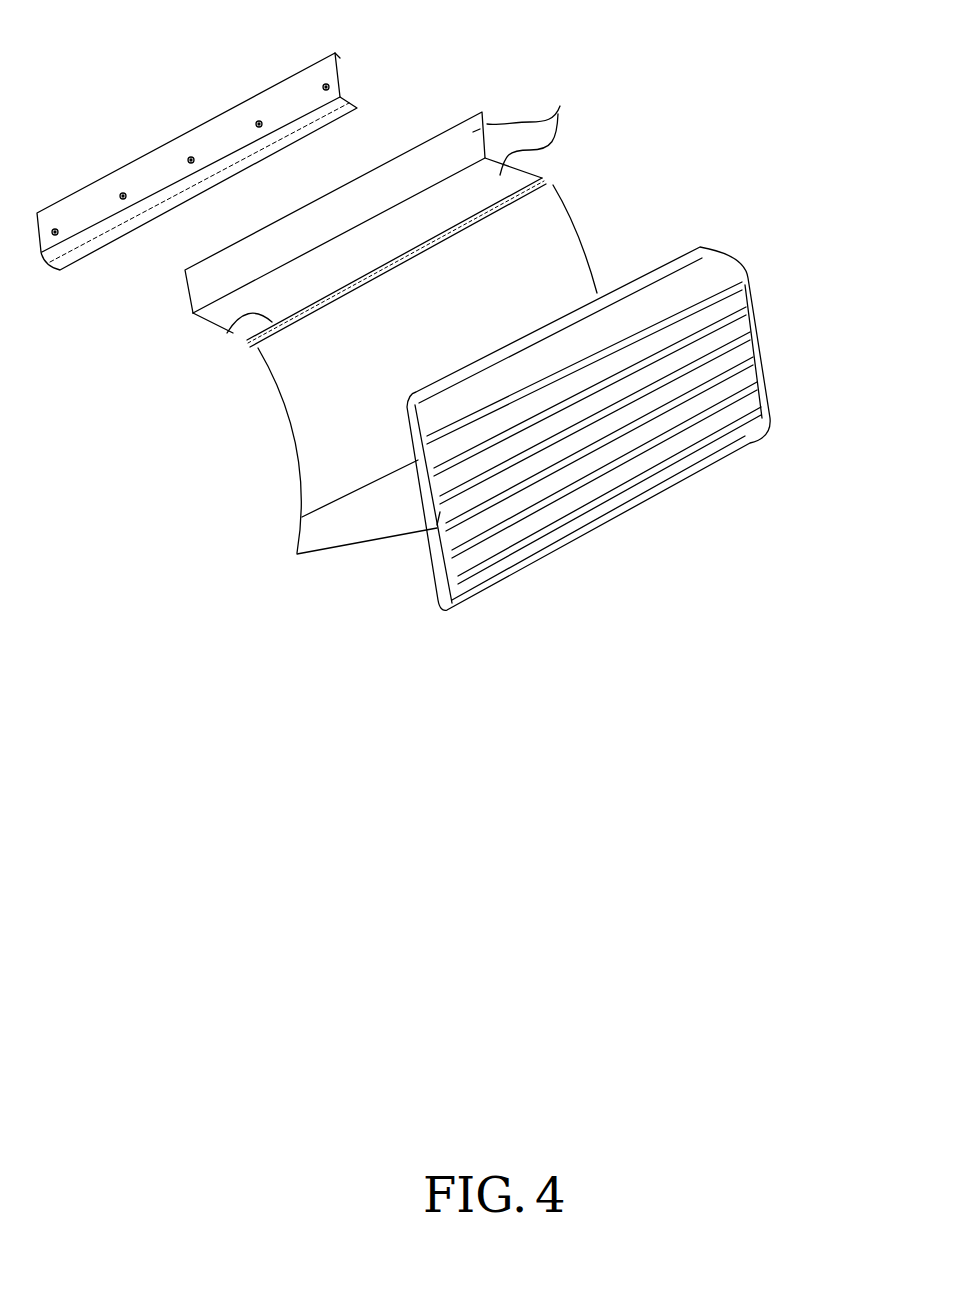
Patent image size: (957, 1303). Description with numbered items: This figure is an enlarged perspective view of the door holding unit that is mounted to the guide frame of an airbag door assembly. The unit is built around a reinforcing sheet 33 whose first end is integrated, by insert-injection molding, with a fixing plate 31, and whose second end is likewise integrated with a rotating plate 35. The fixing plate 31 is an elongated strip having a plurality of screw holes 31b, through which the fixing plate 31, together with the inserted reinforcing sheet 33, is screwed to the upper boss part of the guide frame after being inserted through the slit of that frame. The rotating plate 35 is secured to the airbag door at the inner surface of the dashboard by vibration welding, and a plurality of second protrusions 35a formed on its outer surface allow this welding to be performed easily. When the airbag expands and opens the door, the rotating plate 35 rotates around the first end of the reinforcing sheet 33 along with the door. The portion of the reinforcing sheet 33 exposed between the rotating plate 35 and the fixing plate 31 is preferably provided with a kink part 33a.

The fixing plate 31 is at (285, 99).
The screw holes 31b is at (188, 154).
The reinforcing sheet 33 is at (540, 223).
The kink part 33a is at (233, 330).
The rotating plate 35 is at (745, 288).
The second protrusions 35a is at (437, 525).